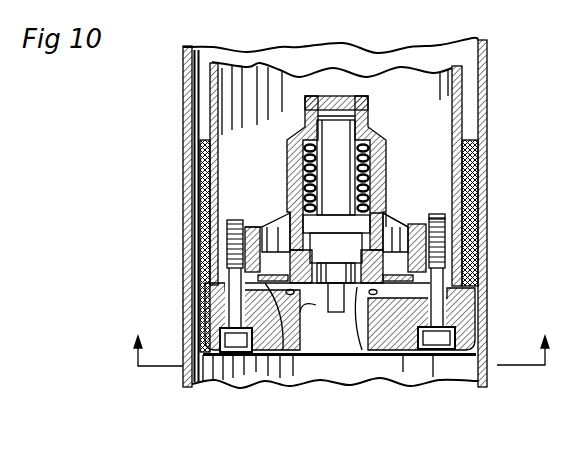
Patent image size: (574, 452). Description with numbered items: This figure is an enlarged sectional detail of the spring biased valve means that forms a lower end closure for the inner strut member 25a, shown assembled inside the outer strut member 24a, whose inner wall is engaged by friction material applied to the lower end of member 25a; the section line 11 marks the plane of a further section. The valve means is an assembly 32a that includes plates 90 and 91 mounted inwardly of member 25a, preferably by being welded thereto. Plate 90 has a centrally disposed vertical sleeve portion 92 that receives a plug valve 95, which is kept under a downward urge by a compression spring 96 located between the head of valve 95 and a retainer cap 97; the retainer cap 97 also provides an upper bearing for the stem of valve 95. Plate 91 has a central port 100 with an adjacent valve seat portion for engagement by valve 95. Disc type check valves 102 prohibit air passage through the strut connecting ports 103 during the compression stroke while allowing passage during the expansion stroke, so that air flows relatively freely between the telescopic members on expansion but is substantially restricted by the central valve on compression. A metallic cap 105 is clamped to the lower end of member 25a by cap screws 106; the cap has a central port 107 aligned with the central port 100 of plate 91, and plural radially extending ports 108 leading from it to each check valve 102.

The section line 11- 11 is at (345, 338).
The strut member 24a is at (489, 183).
The strut member 25a is at (462, 92).
The assembly 32a is at (388, 139).
The plate 90 is at (413, 226).
The plate 91 is at (433, 226).
The vertical sleeve portion 92 is at (383, 196).
The plug valve 95 is at (345, 258).
The compression spring 96 is at (288, 205).
The retainer cap 97 is at (370, 108).
The central port 100 is at (313, 316).
The disc type check valve 102 is at (295, 358).
The strut connecting port 103 is at (412, 222).
The metallic cap 105 is at (474, 310).
The cap screw 106 is at (428, 345).
The central port 107 is at (358, 355).
The radially extending port 108 is at (325, 330).